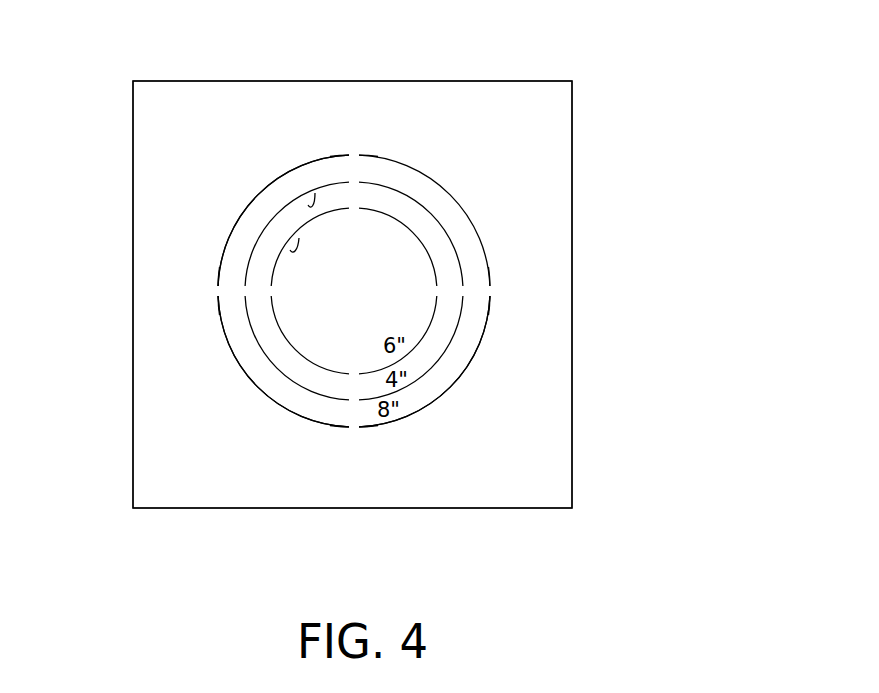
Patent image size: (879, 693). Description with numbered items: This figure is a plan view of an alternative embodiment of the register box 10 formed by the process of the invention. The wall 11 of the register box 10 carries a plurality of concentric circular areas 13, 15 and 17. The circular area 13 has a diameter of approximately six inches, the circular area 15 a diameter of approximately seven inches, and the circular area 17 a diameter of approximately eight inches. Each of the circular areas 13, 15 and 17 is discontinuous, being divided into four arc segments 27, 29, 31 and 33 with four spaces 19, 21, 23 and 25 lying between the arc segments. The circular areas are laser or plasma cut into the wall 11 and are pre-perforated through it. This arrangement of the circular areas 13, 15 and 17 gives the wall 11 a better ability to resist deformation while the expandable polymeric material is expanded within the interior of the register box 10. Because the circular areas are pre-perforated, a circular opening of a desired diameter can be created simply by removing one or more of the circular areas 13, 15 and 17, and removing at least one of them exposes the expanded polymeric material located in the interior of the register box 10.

The register box 10 is at (662, 233).
The wall 11 is at (548, 373).
The circular area 13 is at (290, 250).
The circular area 15 is at (308, 205).
The circular area 17 is at (426, 173).
The space 19 is at (353, 440).
The space 21 is at (483, 289).
The space 23 is at (352, 157).
The space 25 is at (216, 290).
The arc segment 27 is at (275, 405).
The arc segment 29 is at (452, 387).
The arc segment 31 is at (467, 217).
The arc segment 33 is at (240, 213).